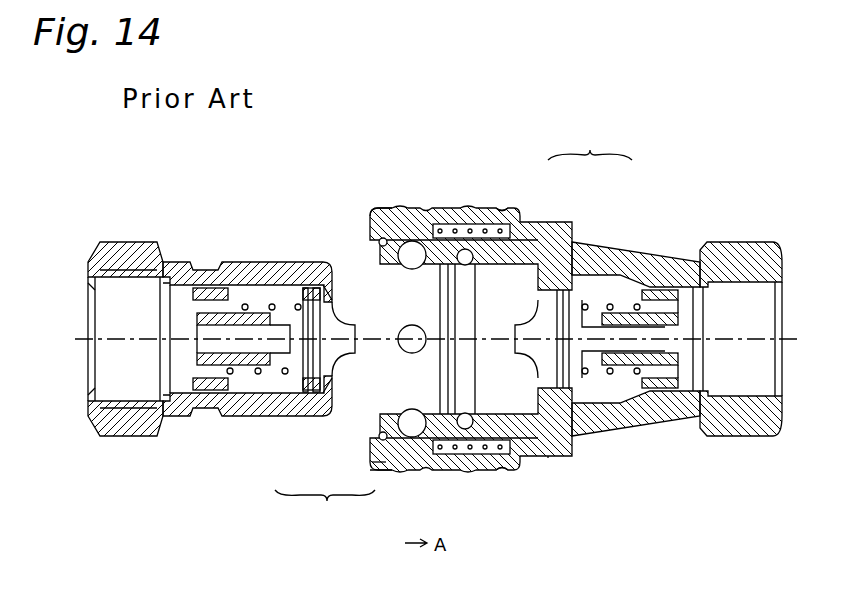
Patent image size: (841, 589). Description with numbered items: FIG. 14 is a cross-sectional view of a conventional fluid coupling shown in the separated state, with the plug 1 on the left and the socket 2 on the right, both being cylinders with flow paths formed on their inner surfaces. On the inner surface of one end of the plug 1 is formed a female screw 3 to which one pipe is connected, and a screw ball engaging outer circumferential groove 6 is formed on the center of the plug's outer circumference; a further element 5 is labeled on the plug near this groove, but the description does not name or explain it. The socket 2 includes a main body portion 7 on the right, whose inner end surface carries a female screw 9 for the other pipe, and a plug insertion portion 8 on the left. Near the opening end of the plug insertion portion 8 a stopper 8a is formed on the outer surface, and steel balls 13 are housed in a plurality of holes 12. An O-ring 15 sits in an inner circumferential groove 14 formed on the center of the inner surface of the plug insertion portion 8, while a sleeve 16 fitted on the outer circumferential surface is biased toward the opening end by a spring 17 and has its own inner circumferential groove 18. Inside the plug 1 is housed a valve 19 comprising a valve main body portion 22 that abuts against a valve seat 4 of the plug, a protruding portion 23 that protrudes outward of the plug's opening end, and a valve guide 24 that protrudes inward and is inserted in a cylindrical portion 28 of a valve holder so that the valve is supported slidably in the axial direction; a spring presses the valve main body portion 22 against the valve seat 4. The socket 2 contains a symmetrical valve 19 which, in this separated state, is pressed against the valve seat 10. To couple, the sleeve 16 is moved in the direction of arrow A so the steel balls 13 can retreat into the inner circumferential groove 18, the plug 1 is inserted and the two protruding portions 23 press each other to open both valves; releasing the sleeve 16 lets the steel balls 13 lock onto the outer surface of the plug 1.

The plug 1 is at (120, 242).
The socket 2 is at (590, 142).
The female screw 3 is at (88, 292).
The valve seat 4 is at (336, 264).
The valve seat 5 is at (190, 266).
The screw ball engaging outer circumferential groove 6 is at (205, 266).
The main body portion 7 is at (622, 250).
The plug insertion portion 8 is at (545, 222).
The stopper 8a is at (383, 468).
The female screw 9 is at (740, 284).
The valve seat 10 is at (540, 283).
The holes 12 is at (437, 232).
The steel balls 13 is at (412, 248).
The inner circumferential groove 14 is at (484, 232).
The O-ring 15 is at (464, 250).
The sleeve 16 is at (380, 208).
The spring 17 is at (500, 222).
The inner circumferential groove 18 is at (379, 241).
The valve 19 is at (548, 457).
The valve main body portion 22 is at (317, 393).
The protruding portion 23 is at (353, 356).
The valve guide 24 is at (305, 392).
The cylindrical portion 28 is at (176, 345).